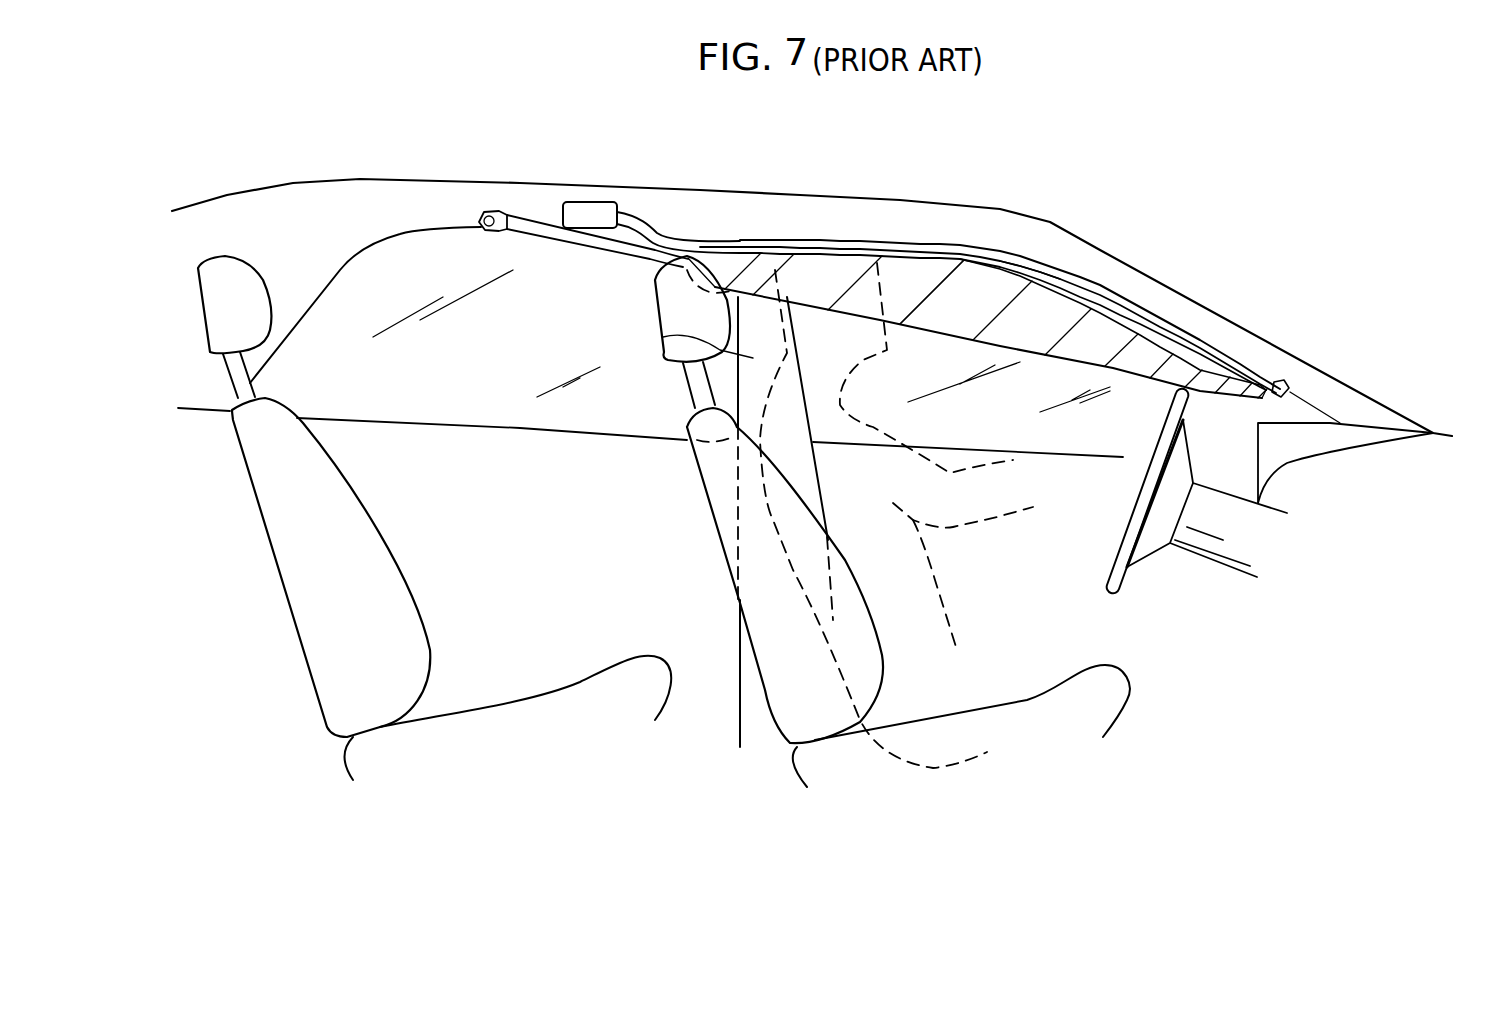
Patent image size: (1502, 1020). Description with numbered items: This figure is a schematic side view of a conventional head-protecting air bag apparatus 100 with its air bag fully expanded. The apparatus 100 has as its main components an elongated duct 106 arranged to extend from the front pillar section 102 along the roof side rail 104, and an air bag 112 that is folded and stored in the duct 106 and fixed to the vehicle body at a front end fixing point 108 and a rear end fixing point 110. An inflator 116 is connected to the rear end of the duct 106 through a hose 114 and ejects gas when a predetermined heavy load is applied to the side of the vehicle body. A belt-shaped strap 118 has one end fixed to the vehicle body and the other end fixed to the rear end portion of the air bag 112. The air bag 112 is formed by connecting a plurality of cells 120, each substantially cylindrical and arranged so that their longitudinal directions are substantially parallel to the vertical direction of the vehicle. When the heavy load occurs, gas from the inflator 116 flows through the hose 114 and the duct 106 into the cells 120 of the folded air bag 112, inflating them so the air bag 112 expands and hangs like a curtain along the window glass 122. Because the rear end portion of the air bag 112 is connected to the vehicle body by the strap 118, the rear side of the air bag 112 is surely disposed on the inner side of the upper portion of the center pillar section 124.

The head-protecting air bag apparatus 100 is at (1113, 216).
The front pillar section 102 is at (1200, 310).
The roof side rail 104 is at (848, 213).
The duct 106 is at (723, 242).
The front end fixing point 108 is at (1282, 386).
The rear end fixing point 110 is at (740, 238).
The air bag 112 is at (1023, 258).
The hose 114 is at (657, 233).
The inflator 116 is at (592, 203).
The strap 118 is at (522, 227).
The cells 120 is at (958, 283).
The window glass 122 is at (1050, 430).
The center pillar section 124 is at (663, 337).